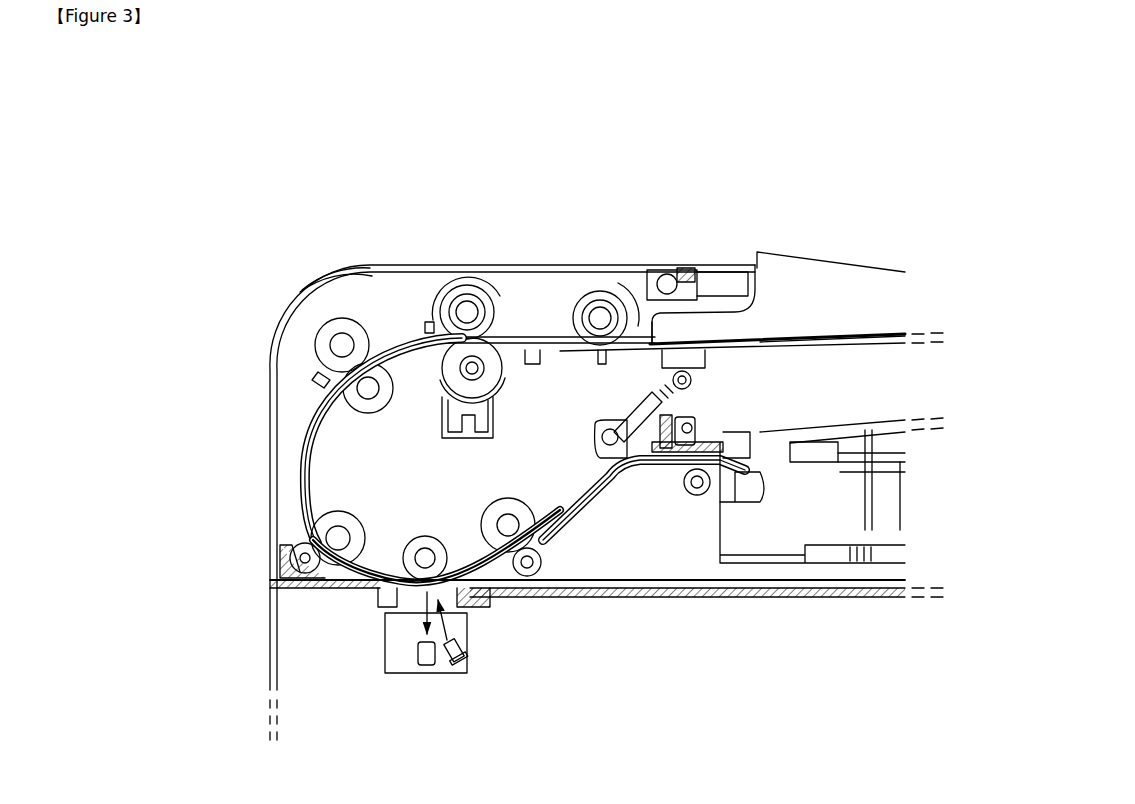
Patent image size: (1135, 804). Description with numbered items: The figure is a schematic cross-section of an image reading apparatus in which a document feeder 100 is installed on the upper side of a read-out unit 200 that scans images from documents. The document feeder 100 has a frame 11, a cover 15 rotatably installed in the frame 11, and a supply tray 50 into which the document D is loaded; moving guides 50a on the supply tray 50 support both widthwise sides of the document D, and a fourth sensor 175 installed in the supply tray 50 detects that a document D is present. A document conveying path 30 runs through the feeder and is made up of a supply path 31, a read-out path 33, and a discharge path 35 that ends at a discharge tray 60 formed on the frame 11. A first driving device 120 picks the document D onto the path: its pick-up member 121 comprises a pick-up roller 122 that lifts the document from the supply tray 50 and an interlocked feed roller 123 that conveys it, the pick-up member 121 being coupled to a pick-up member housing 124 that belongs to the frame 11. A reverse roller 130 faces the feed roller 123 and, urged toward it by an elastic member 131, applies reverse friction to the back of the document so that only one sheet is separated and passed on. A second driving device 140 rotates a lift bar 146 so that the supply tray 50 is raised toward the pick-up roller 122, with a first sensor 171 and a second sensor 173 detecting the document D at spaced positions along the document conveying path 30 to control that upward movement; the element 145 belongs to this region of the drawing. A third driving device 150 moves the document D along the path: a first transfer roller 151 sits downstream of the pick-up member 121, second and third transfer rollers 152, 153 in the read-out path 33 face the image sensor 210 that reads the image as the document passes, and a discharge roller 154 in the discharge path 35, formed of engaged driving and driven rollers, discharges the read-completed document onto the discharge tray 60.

The frame 11 is at (270, 299).
The cover 15 is at (657, 266).
The document conveying path 30 is at (298, 450).
The supply path 31 is at (520, 330).
The read-out path 33 is at (387, 588).
The discharge path 35 is at (612, 478).
The supply tray 50 is at (890, 352).
The moving guides 50a is at (808, 264).
The discharge tray 60 is at (890, 556).
The document feeder 100 is at (310, 256).
The first driving device 120 is at (602, 145).
The pick-up member 121 is at (604, 192).
The pick-up roller 122 is at (601, 289).
The feed roller 123 is at (467, 283).
The pick-up member housing 124 is at (540, 334).
The reverse roller 130 is at (438, 364).
The elastic member 131 is at (308, 286).
The second driving device 140 is at (672, 662).
The actuator 145 is at (650, 474).
The lift bar 146 is at (658, 468).
The third driving device 150 is at (188, 580).
The first transfer roller 151 is at (310, 374).
The second transfer roller 152 is at (298, 533).
The third transfer roller 153 is at (298, 576).
The discharge roller 154 is at (508, 517).
The first sensor 171 is at (428, 322).
The second sensor 173 is at (315, 347).
The fourth sensor 175 is at (658, 356).
The read-out unit 200 is at (242, 658).
The image sensor 210 is at (482, 668).
The document D is at (834, 333).